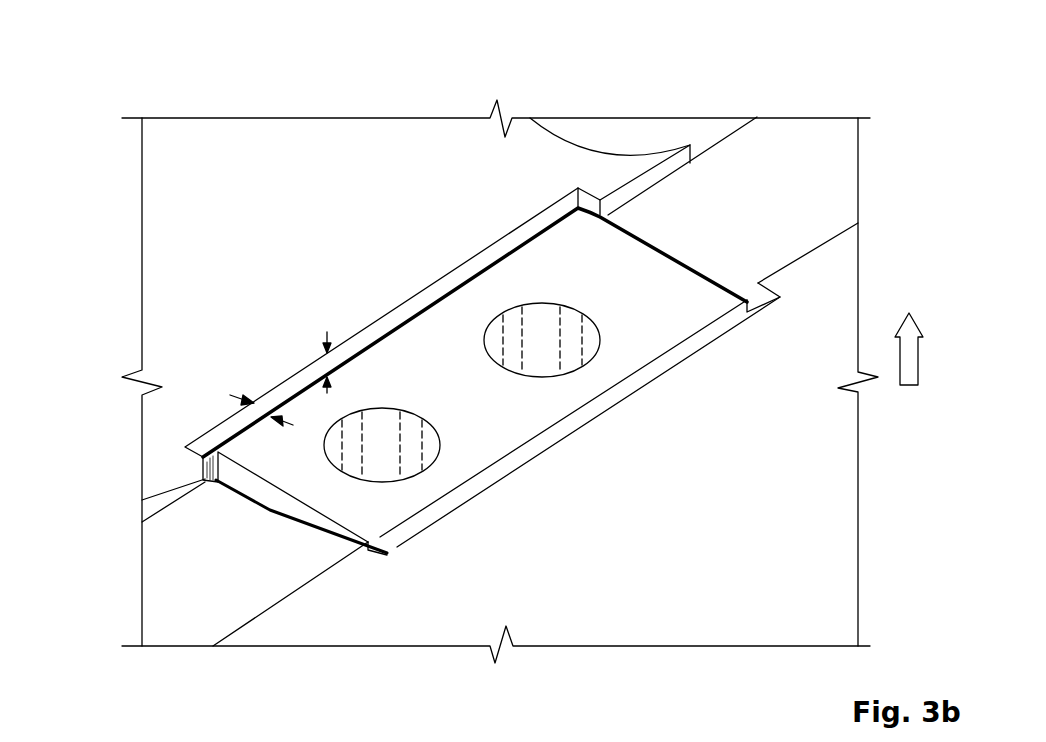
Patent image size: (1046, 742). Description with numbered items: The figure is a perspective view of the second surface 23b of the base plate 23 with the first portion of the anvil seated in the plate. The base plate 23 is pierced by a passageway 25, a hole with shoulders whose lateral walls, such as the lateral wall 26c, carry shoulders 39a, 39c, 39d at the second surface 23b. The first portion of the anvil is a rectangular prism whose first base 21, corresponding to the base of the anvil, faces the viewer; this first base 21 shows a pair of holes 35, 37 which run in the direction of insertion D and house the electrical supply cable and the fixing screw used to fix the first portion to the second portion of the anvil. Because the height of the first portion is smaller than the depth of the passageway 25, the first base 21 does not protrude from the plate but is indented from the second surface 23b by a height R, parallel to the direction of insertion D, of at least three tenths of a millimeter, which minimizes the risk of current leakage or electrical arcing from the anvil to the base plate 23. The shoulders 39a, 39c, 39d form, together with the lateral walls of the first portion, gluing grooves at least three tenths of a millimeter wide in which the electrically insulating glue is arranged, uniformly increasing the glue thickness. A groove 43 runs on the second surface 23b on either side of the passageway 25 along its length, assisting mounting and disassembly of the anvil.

The first base 21 is at (590, 253).
The base plate 23 is at (198, 145).
The second surface 23b is at (267, 165).
The passageway 25 is at (523, 240).
The lateral wall 26c is at (463, 281).
The hole 35 is at (382, 448).
The hole 37 is at (550, 338).
The shoulder 39a is at (480, 493).
The shoulder 39c is at (412, 313).
The shoulder 39d is at (222, 486).
The groove 43 is at (785, 137).
The height of the indent R is at (338, 357).
The direction of insertion D is at (918, 360).